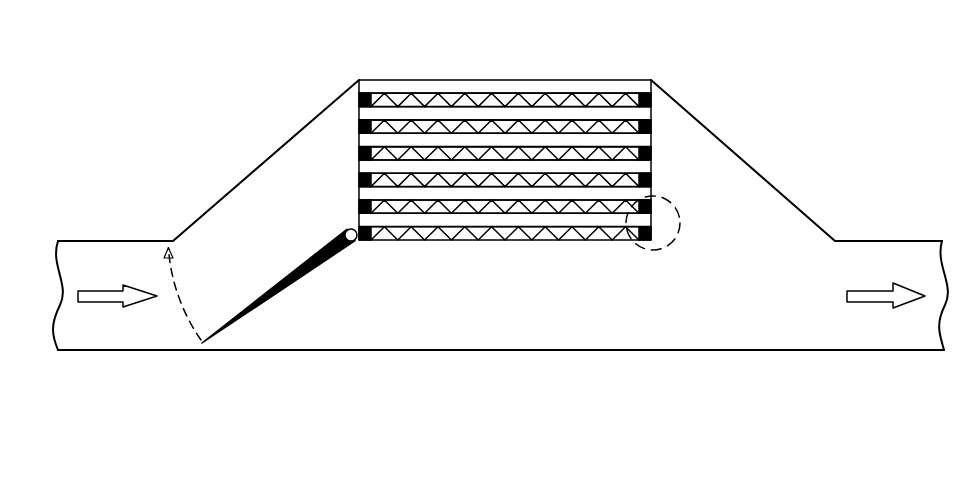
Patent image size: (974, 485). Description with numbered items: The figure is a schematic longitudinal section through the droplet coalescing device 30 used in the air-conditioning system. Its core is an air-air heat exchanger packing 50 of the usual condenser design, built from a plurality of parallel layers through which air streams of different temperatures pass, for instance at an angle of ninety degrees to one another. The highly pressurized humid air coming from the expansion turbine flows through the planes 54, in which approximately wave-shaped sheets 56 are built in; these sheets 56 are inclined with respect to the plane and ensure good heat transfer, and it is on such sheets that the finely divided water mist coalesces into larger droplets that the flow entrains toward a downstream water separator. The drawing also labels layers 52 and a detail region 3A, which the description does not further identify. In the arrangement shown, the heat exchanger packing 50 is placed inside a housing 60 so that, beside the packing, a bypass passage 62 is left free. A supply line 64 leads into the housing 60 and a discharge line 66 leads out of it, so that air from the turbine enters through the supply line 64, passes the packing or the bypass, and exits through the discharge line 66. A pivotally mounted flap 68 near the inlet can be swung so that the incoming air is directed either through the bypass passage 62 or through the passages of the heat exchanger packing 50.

The droplet coalescing device 30 is at (500, 239).
The air-air heat exchanger packing 50 is at (511, 163).
The plates 52 is at (408, 80).
The planes 54 is at (463, 102).
The wave-shaped sheets 56 is at (528, 92).
The housing 60 is at (500, 246).
The bypass passage 62 is at (470, 327).
The supply line 64 is at (112, 340).
The discharge line 66 is at (897, 333).
The pivotally mounted flap 68 is at (253, 308).
The detail view circle 3A is at (663, 248).